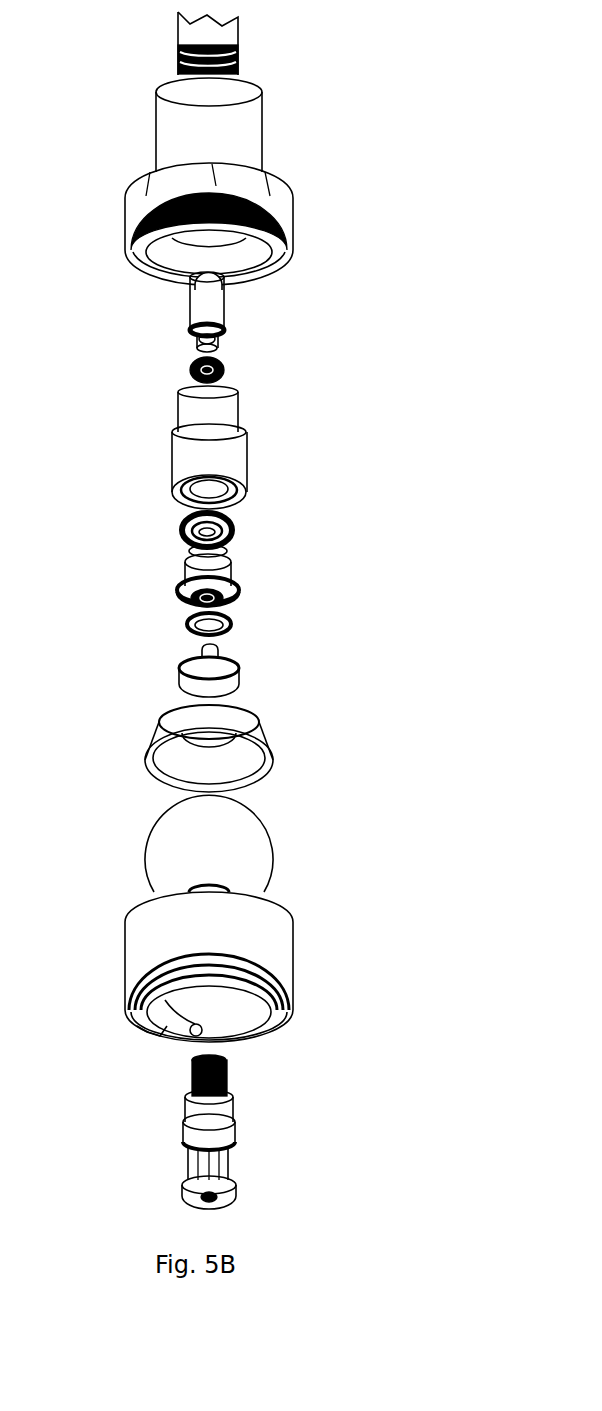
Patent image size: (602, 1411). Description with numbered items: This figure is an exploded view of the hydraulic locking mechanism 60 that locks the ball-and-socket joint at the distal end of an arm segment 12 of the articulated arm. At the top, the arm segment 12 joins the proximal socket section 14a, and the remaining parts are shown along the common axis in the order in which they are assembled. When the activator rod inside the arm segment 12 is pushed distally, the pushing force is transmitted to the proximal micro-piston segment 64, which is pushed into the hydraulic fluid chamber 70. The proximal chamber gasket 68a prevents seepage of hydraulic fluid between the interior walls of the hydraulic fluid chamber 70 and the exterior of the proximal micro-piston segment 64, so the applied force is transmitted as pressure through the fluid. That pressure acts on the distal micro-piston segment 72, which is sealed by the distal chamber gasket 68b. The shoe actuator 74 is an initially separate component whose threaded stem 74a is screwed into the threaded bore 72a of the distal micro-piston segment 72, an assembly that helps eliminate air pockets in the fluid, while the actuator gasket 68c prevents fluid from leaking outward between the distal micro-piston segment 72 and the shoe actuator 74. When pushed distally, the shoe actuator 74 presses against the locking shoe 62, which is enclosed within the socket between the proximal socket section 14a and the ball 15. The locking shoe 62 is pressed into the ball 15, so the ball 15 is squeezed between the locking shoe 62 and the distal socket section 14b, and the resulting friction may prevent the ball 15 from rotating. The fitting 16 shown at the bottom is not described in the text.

The arm segment 12 is at (233, 65).
The proximal socket section 14a is at (265, 180).
The hydraulic locking mechanism 60 is at (367, 260).
The proximal micro-piston segment 64 is at (218, 313).
The proximal chamber gasket 68a is at (222, 368).
The hydraulic fluid chamber 70 is at (246, 452).
The distal chamber gasket 68b is at (225, 518).
The distal micro-piston segment 72 is at (147, 571).
The threaded bore 72a is at (205, 598).
The actuator gasket 68c is at (222, 618).
The threaded stem 74a is at (205, 651).
The shoe actuator 74 is at (232, 676).
The locking shoe 62 is at (160, 732).
The ball 15 is at (272, 852).
The distal socket section 14b is at (125, 965).
The connector 16 is at (228, 1120).